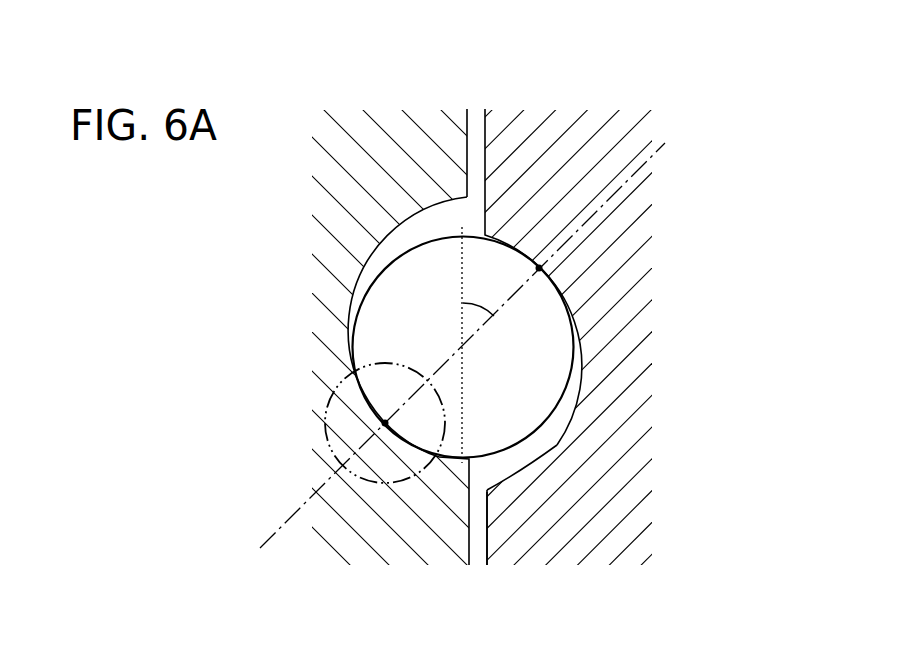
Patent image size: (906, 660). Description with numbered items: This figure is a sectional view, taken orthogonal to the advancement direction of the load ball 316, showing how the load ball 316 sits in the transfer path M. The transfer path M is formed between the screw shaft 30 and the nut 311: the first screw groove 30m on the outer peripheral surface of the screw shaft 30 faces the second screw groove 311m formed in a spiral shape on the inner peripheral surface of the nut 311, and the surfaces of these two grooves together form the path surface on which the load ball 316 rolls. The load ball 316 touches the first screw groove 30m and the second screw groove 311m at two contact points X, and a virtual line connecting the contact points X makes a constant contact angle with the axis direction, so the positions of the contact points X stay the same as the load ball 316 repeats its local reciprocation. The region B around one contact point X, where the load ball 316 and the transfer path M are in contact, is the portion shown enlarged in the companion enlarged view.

The nut 311 is at (612, 133).
The second screw groove 311m is at (529, 465).
The screw shaft 30 is at (355, 512).
The first screw groove 30m is at (362, 268).
The load ball 316 is at (382, 298).
The region B is at (417, 480).
The transfer path M is at (504, 463).
The contact point X is at (385, 420).